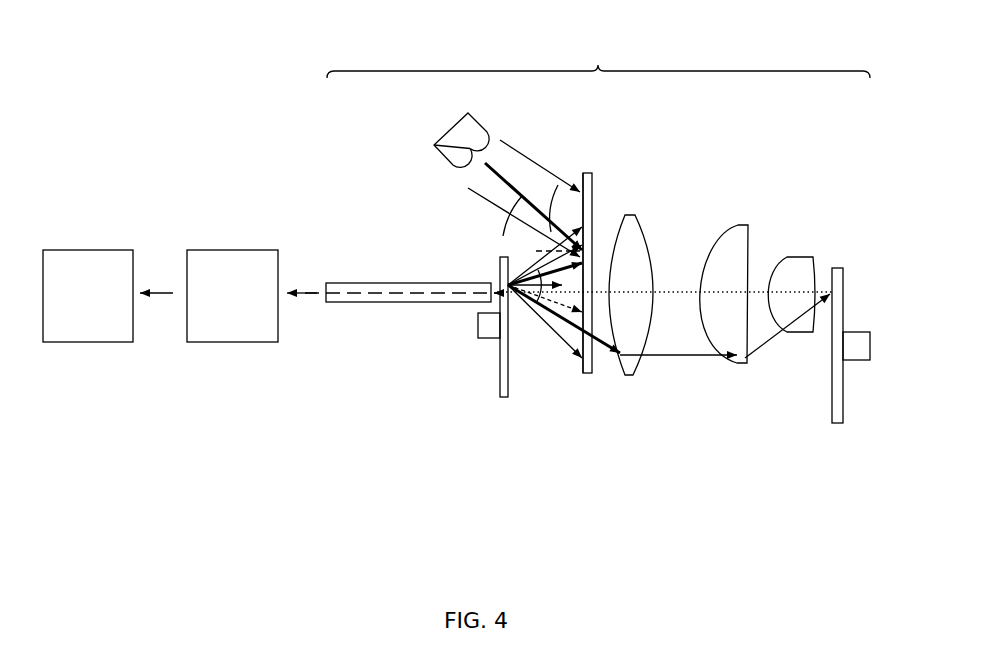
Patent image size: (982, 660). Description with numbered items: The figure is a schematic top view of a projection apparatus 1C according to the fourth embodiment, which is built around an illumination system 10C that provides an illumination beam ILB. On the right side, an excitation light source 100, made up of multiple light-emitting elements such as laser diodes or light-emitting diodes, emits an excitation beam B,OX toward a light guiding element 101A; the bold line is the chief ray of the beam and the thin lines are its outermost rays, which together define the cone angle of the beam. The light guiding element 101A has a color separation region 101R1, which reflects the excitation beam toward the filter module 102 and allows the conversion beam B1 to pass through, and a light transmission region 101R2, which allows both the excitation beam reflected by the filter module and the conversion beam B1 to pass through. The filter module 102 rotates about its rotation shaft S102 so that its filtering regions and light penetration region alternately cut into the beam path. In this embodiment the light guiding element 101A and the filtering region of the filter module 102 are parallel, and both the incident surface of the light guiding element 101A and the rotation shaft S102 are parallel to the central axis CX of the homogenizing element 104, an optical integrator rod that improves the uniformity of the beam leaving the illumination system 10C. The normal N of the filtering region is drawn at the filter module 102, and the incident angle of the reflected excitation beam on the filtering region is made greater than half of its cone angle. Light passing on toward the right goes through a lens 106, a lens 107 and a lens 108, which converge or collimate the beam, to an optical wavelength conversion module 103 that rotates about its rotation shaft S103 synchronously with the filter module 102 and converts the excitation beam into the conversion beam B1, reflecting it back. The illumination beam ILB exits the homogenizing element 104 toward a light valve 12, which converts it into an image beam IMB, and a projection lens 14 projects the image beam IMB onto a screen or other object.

The projection lens 14 is at (77, 306).
The light valve 12 is at (221, 306).
The image beam IMB is at (158, 298).
The illumination beam ILB is at (298, 298).
The homogenizing element 104 is at (405, 284).
The central axis CX is at (352, 290).
The filter module 102 is at (497, 372).
The rotation shaft of the filter module S102 is at (478, 327).
The excitation light source 100 is at (455, 136).
The excitation beam B,OX is at (506, 213).
The light guiding element 101A is at (589, 210).
The color separation region 101R1 is at (580, 193).
The light transmission region 101R2 is at (580, 369).
The normal N is at (545, 292).
The conversion beam B1 is at (677, 290).
The lens 106 is at (633, 215).
The lens 107 is at (745, 225).
The lens 108 is at (800, 257).
The optical wavelength conversion module 103 is at (853, 402).
The rotation shaft of the optical wavelength conversion module S103 is at (860, 338).
The illumination system 10C is at (598, 58).
The projection apparatus 1C is at (803, 535).